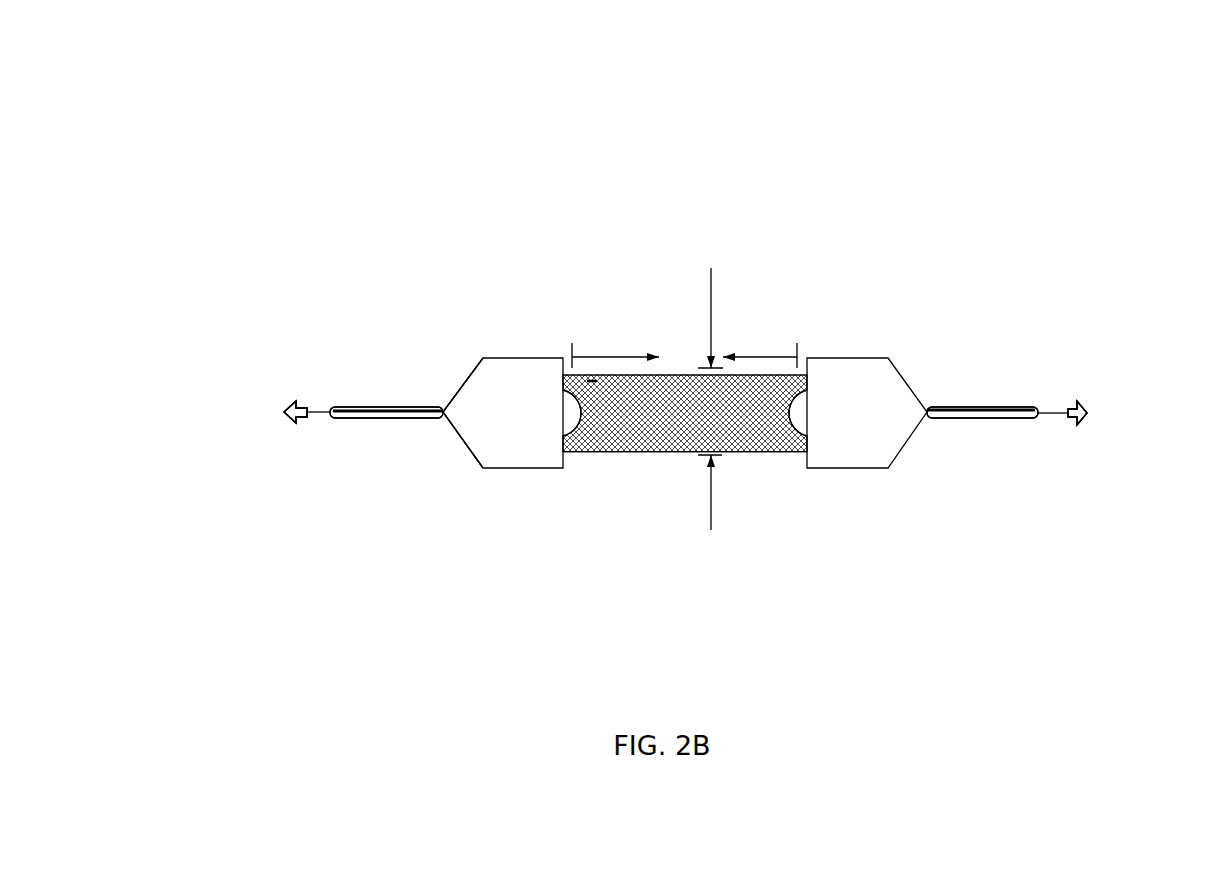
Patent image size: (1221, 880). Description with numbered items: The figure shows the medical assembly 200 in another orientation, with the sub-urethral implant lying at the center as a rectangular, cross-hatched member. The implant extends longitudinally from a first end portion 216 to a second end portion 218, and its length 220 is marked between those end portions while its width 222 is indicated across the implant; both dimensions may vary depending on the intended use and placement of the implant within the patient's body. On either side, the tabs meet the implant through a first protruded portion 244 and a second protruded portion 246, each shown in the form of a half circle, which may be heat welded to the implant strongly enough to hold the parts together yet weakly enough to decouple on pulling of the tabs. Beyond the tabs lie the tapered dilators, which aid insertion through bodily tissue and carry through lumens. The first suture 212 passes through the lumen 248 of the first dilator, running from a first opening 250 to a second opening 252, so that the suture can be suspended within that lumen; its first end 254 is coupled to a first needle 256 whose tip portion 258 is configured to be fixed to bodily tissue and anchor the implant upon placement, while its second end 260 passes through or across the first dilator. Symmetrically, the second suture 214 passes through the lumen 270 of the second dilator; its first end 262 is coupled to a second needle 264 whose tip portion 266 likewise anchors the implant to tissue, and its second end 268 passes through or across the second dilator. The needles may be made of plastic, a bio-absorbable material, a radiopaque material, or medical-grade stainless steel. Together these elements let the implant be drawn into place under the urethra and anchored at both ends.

The medical assembly 200 is at (147, 119).
The first suture 212 is at (347, 420).
The second suture 214 is at (997, 405).
The first end portion 216 is at (573, 378).
The second end portion 218 is at (797, 442).
The length 220 is at (684, 359).
The width 222 is at (716, 385).
The first protruded portion 244 is at (572, 420).
The second protruded portion 246 is at (797, 415).
The lumen 248 is at (398, 408).
The first opening 250 is at (332, 406).
The second opening 252 is at (443, 407).
The first end 254 is at (300, 422).
The first needle 256 is at (298, 422).
The tip portion 258 is at (284, 412).
The second end 260 is at (441, 422).
The first end 262 is at (1073, 408).
The second needle 264 is at (1087, 413).
The tip portion 266 is at (1087, 413).
The second end 268 is at (931, 408).
The lumen 270 is at (985, 420).